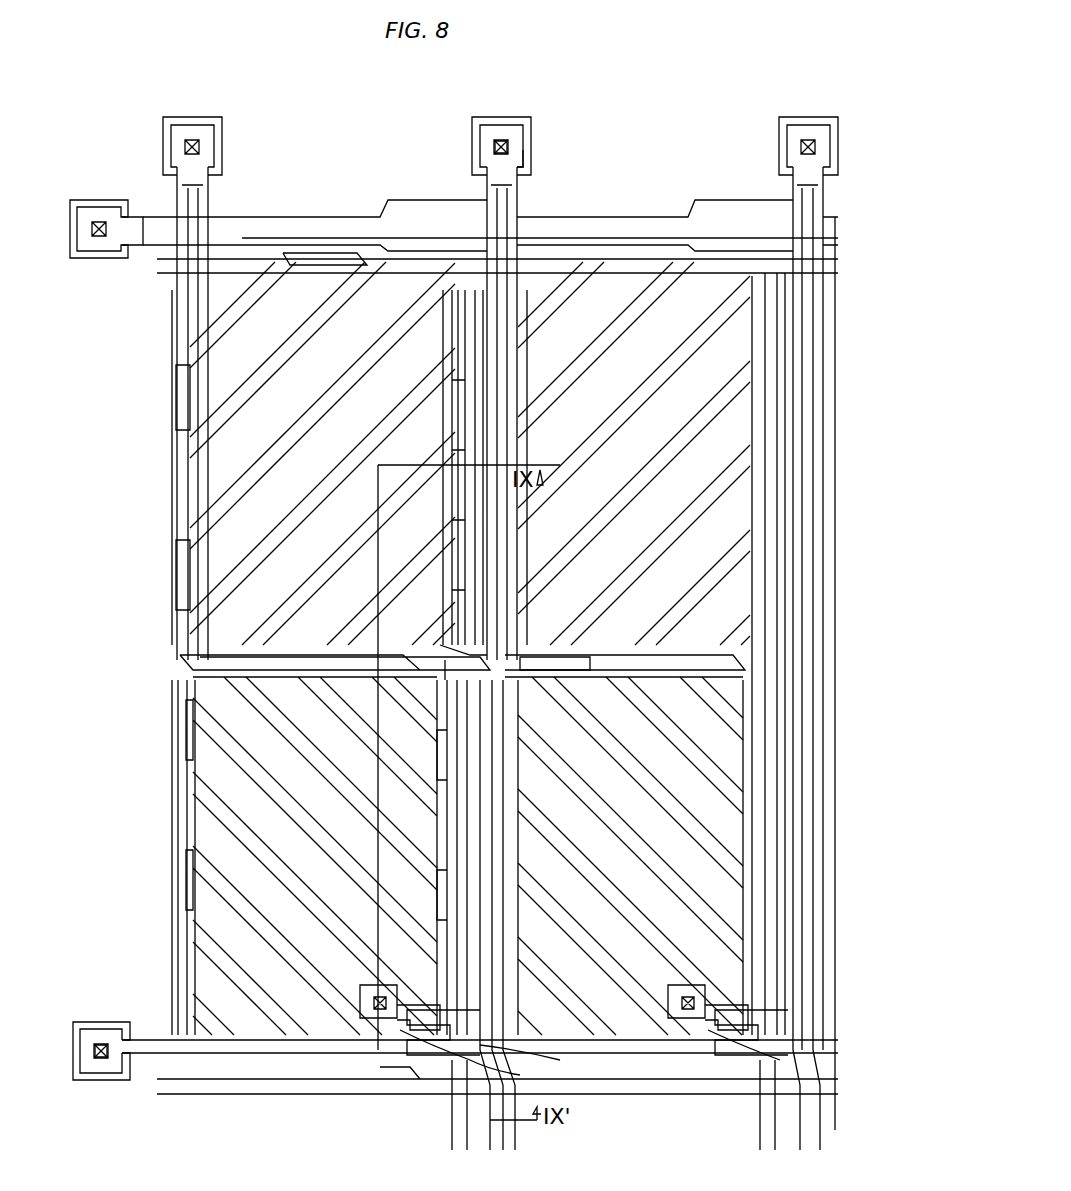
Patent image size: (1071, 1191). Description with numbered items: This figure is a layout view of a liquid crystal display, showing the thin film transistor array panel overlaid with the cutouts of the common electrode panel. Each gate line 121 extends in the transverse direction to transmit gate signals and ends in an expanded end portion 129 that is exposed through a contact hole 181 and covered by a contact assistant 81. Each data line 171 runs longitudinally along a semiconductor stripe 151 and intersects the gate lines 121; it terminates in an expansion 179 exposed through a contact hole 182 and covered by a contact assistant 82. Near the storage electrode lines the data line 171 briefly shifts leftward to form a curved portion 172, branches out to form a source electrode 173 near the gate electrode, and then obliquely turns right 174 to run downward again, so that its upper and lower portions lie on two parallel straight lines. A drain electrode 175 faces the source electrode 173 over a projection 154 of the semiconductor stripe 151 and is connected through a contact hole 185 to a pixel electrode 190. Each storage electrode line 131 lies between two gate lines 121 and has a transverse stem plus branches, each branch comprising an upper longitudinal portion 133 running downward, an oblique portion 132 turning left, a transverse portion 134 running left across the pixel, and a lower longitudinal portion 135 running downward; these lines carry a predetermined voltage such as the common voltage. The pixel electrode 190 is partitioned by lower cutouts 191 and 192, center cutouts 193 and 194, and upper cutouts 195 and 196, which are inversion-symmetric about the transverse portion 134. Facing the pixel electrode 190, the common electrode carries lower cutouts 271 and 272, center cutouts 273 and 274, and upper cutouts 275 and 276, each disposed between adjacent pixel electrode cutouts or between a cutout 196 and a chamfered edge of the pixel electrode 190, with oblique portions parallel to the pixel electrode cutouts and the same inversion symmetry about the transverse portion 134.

The contact assistant 82 is at (512, 117).
The contact hole 182 is at (494, 148).
The expansion 179 is at (524, 162).
The contact assistant 81 is at (73, 1040).
The contact hole 181 is at (108, 1046).
The expanded end portion 129 is at (140, 1082).
The pixel electrode 190 is at (300, 238).
The storage electrode line 131 is at (618, 275).
The gate line 121 is at (245, 1095).
The data line 171 is at (519, 205).
The upper cutout 276 is at (215, 322).
The upper cutout 196 is at (200, 387).
The upper cutout 275 is at (205, 445).
The upper cutout 195 is at (232, 558).
The center cutout 274 is at (400, 614).
The center cutout 194 is at (420, 642).
The upper longitudinal portion 133 is at (750, 502).
The semiconductor stripe 151 is at (495, 332).
The oblique portion 132 is at (718, 647).
The transverse portion 134 is at (635, 674).
The curved portion 172 is at (490, 642).
The center cutout 273 is at (320, 707).
The center cutout 193 is at (300, 742).
The lower cutout 192 is at (230, 772).
The lower cutout 272 is at (205, 827).
The lower cutout 191 is at (200, 892).
The lower cutout 271 is at (190, 942).
The lower longitudinal portion 135 is at (497, 982).
The oblique turn of data line 174 is at (585, 1092).
The contact hole 185 is at (375, 1017).
The drain electrode 175 is at (380, 1014).
The source electrode 173 is at (428, 1052).
The projection 154 is at (540, 1062).